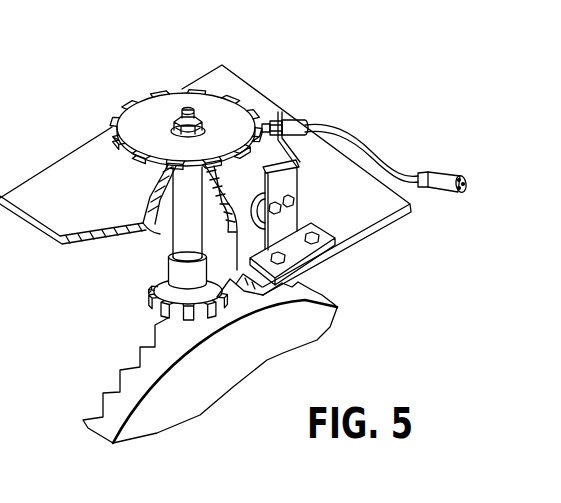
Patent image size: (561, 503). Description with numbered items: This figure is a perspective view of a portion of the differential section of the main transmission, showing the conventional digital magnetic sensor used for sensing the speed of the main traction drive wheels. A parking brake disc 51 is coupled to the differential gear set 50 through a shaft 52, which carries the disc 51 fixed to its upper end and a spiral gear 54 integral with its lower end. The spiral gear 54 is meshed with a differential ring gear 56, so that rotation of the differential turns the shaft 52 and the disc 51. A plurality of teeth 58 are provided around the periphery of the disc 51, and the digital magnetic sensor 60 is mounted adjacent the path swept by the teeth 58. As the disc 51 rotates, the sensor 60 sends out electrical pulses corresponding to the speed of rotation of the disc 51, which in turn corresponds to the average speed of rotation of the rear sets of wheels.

The differential gear set 50 is at (127, 322).
The parking brake disc 51 is at (143, 115).
The shaft 52 is at (173, 250).
The spiral gear 54 is at (152, 295).
The differential ring gear 56 is at (122, 370).
The teeth 58 is at (154, 91).
The digital magnetic sensor 60 is at (300, 117).